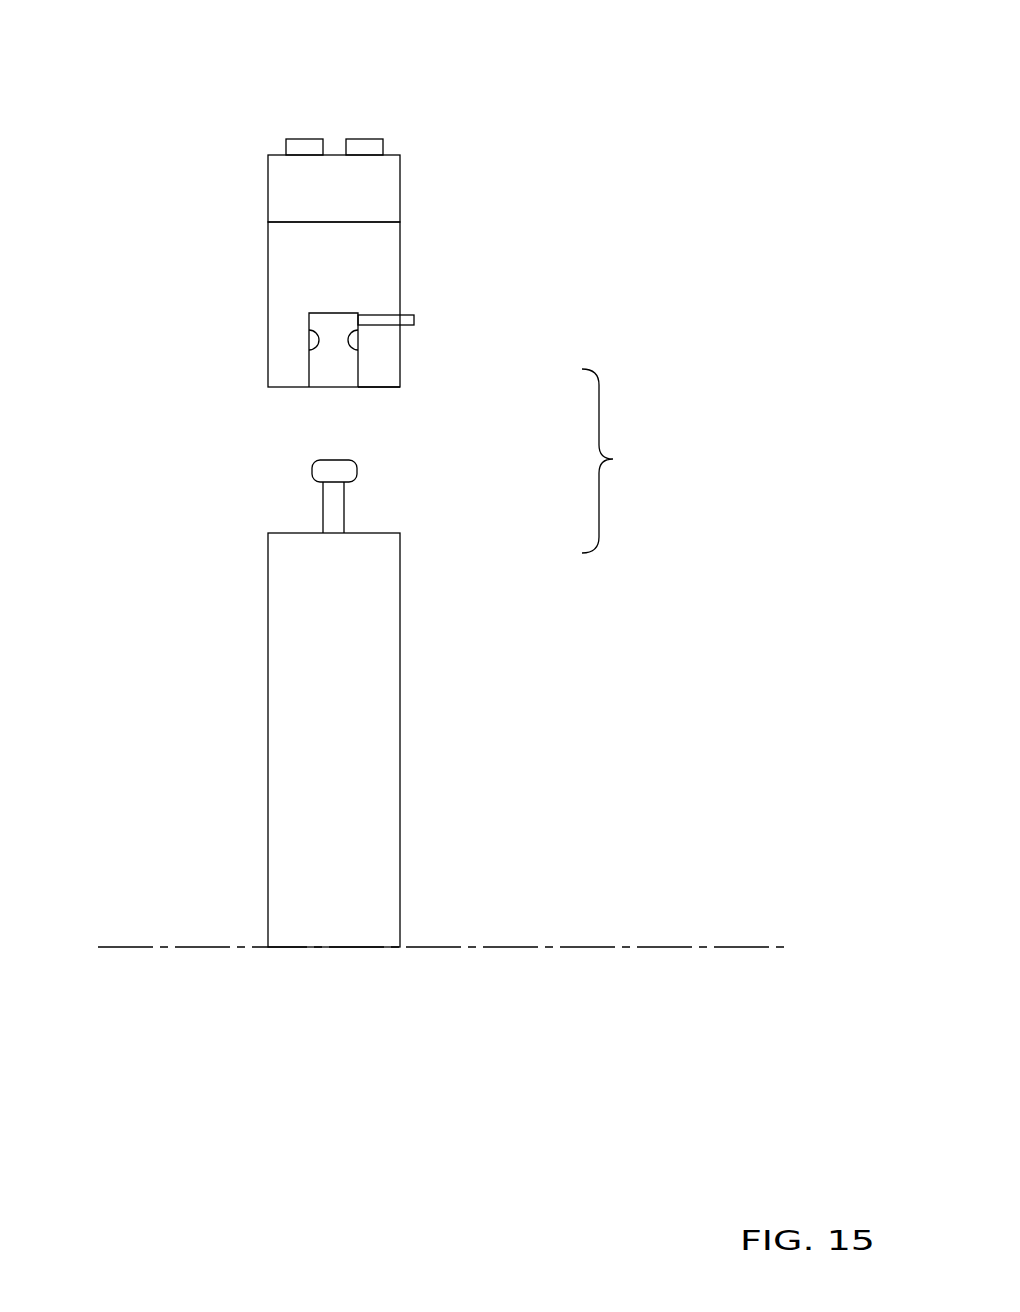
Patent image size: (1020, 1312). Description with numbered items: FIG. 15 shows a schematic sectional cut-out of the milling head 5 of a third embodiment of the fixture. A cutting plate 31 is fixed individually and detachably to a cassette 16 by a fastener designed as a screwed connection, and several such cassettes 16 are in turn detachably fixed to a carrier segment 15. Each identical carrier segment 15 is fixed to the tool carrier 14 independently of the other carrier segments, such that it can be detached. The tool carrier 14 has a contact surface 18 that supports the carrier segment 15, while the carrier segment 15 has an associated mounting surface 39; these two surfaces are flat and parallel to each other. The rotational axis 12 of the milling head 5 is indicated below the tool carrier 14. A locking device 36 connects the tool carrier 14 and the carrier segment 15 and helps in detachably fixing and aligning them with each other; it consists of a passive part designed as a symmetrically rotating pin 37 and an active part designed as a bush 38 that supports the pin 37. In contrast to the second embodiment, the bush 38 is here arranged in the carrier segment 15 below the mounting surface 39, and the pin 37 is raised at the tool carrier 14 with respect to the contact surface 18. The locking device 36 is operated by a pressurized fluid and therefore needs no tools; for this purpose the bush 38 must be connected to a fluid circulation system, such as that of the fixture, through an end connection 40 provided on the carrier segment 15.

The milling head 5 is at (625, 170).
The rotational axis 12 is at (462, 947).
The tool carrier 14 is at (333, 661).
The carrier segment 15 is at (360, 270).
The cassette 16 is at (372, 190).
The contact surface 18 is at (285, 527).
The cutting plate 31 is at (355, 230).
The locking device 36 is at (617, 461).
The pin 37 is at (347, 498).
The bush 38 is at (320, 310).
The mounting surface 39 is at (386, 393).
The end connection 40 is at (418, 320).